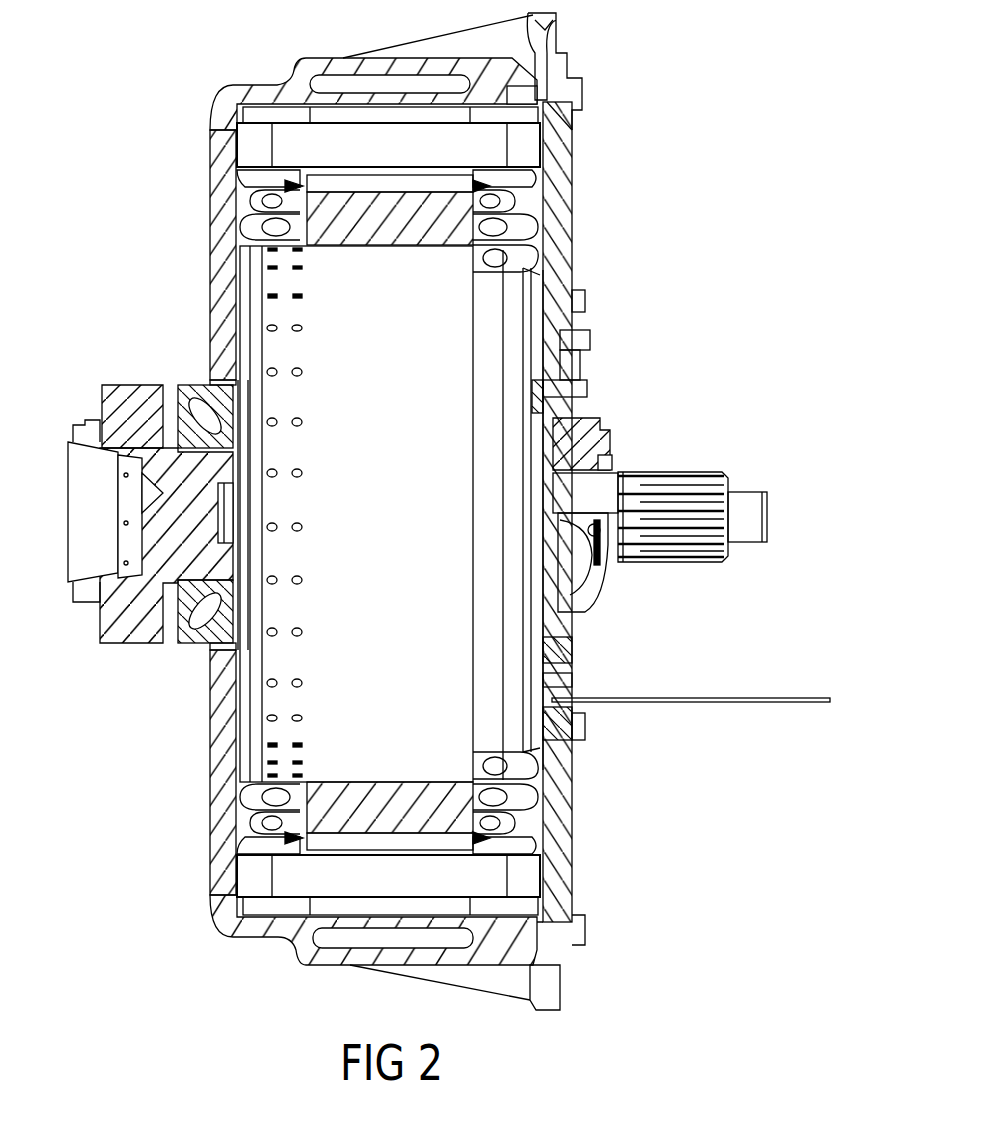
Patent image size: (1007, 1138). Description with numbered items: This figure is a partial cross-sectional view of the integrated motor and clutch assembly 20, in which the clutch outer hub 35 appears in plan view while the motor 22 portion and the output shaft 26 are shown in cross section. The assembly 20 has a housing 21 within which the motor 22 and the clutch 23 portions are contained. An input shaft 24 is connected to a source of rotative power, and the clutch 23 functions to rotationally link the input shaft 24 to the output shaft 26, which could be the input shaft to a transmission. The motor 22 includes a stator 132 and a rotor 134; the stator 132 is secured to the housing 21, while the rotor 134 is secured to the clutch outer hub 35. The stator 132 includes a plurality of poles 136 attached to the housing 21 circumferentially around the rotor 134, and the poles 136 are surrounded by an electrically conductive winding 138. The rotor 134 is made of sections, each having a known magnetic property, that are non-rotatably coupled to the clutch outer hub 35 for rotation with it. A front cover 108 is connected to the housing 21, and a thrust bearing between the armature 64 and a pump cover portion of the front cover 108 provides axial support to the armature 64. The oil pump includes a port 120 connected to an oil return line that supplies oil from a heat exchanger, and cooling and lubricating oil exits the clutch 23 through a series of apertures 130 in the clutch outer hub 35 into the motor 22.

The integrated motor and clutch assembly 20 is at (745, 235).
The housing 21 is at (552, 985).
The motor 22 is at (548, 157).
The clutch 23 is at (552, 382).
The input shaft 24 is at (733, 498).
The output shaft 26 is at (190, 560).
The clutch outer hub 35 is at (447, 320).
The armature 64 is at (505, 658).
The front cover 108 is at (553, 902).
The port 120 is at (615, 520).
The apertures 130 is at (258, 356).
The stator 132 is at (224, 142).
The rotor 134 is at (325, 222).
The poles 136 is at (445, 180).
The electrically conductive winding 138 is at (525, 145).